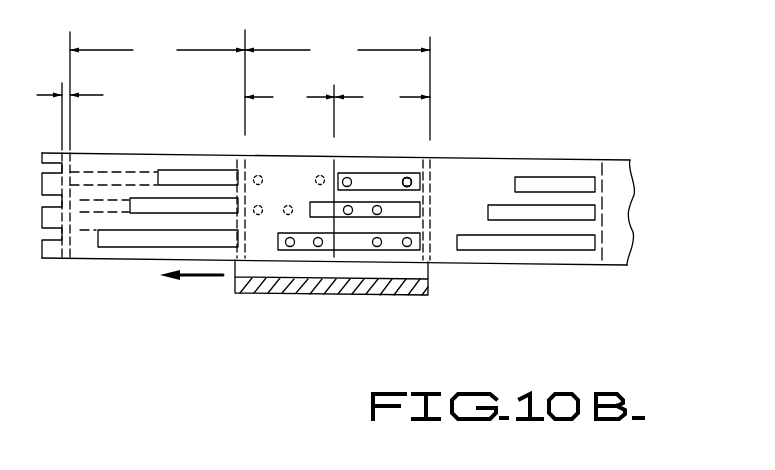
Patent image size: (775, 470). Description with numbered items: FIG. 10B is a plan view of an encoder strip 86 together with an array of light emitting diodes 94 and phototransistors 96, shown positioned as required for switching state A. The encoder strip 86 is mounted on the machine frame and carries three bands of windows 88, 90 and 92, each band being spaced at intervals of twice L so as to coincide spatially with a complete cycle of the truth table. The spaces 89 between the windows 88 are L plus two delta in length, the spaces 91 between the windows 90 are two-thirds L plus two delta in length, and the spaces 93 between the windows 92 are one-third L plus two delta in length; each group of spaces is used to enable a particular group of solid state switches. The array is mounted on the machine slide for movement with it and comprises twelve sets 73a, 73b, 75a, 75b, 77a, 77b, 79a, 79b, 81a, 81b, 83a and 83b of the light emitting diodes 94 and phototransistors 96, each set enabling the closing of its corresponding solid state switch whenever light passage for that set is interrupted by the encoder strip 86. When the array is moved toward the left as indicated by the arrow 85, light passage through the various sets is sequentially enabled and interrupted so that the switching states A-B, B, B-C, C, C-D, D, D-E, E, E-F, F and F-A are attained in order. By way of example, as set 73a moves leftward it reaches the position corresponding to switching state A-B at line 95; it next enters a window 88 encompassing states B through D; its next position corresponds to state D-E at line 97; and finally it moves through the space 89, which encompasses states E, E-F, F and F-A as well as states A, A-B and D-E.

The set of light emitting diode and phototransistor 73a is at (257, 173).
The set of light emitting diode and phototransistor 73b is at (348, 177).
The set of light emitting diode and phototransistor 75a is at (291, 246).
The set of light emitting diode and phototransistor 75b is at (349, 214).
The set of light emitting diode and phototransistor 77a is at (257, 216).
The set of light emitting diode and phototransistor 77b is at (379, 246).
The set of light emitting diode and phototransistor 79a is at (319, 246).
The set of light emitting diode and phototransistor 79b is at (382, 212).
The set of light emitting diode and phototransistor 81a is at (284, 214).
The set of light emitting diode and phototransistor 81b is at (412, 244).
The set of light emitting diode and phototransistor 83a is at (410, 180).
The set of light emitting diode and phototransistor 83b is at (321, 174).
The arrow 85 is at (187, 280).
The encoder strip 86 is at (110, 261).
The windows 88 is at (565, 185).
The spaces between windows 89 is at (114, 177).
The windows 90 is at (585, 214).
The spaces between windows 91 is at (77, 205).
The windows 92 is at (580, 250).
The spaces between windows 93 is at (83, 236).
The light emitting diodes 94 is at (410, 172).
The phototransistors 96 is at (407, 182).
The line 95 is at (245, 33).
The line 97 is at (70, 33).